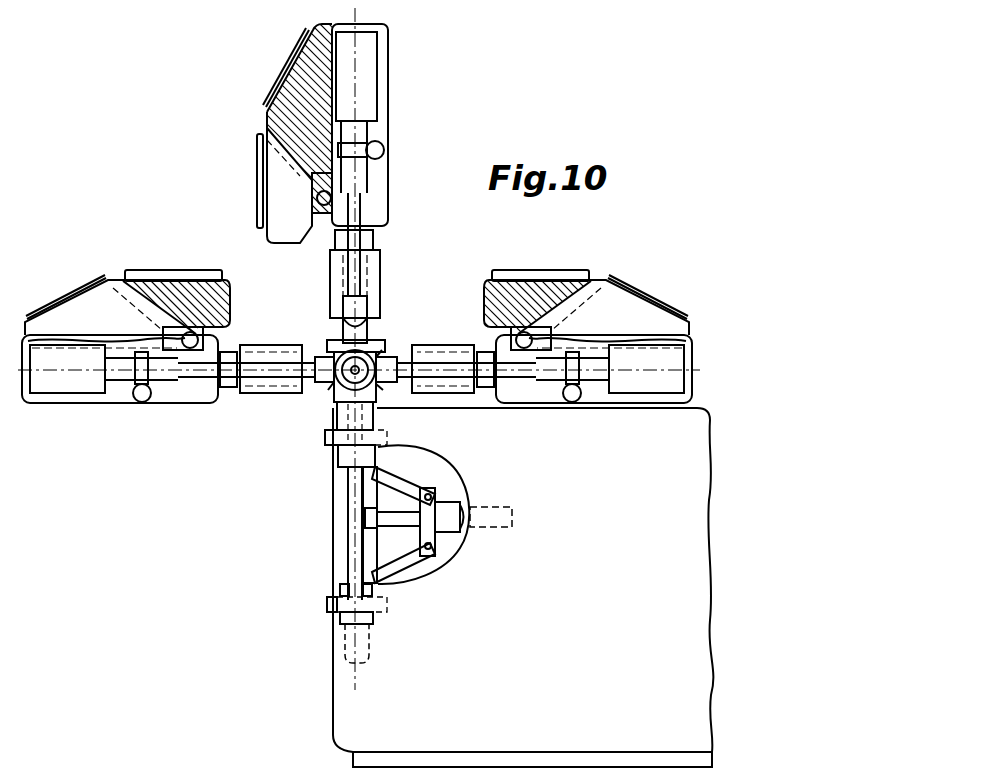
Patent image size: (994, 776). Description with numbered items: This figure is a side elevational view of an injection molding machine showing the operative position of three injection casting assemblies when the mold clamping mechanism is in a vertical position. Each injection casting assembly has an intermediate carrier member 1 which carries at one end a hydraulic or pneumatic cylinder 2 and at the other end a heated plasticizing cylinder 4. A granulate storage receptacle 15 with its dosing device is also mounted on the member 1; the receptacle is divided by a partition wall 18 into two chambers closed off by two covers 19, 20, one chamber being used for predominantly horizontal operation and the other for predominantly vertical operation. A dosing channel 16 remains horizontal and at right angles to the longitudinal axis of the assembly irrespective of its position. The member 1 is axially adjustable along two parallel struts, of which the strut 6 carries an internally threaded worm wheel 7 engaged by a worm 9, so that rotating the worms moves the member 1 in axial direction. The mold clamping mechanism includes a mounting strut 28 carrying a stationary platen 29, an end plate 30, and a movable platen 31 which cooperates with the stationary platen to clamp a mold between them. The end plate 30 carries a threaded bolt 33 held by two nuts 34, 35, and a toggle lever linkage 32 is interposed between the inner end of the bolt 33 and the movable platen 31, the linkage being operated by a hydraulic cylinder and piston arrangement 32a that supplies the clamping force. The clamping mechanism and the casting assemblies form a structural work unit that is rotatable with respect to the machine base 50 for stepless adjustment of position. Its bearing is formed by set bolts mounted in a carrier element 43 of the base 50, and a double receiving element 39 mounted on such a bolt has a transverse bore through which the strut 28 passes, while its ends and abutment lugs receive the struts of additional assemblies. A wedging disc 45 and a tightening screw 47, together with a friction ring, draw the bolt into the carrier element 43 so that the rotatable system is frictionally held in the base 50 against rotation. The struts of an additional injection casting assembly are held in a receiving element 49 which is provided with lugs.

The intermediate carrier member 1 is at (598, 387).
The hydraulic or pneumatic cylinder 2 is at (367, 58).
The plasticizing cylinder 4 is at (367, 275).
The strut 6 is at (360, 240).
The worm wheel 7 is at (365, 150).
The worm 9 is at (380, 145).
The granulate storage receptacle 15 is at (283, 112).
The dosing channel 16 is at (325, 213).
The partition wall 18 is at (305, 142).
The cover 19 is at (257, 175).
The cover 20 is at (305, 66).
The mounting strut 28 is at (353, 572).
The stationary platen 29 is at (327, 343).
The end plate 30 is at (330, 603).
The movable platen 31 is at (330, 447).
The toggle lever linkage 32 is at (370, 538).
The hydraulic cylinder and piston arrangement 32a is at (493, 520).
The threaded bolt 33 is at (352, 643).
The nut 34 is at (345, 620).
The nut 35 is at (342, 587).
The double receiving element 39 is at (327, 380).
The carrier element 43 is at (360, 352).
The wedging disc 45 is at (388, 354).
The tightening screw 47 is at (372, 382).
The receiving element 49 is at (362, 308).
The machine base 50 is at (362, 717).